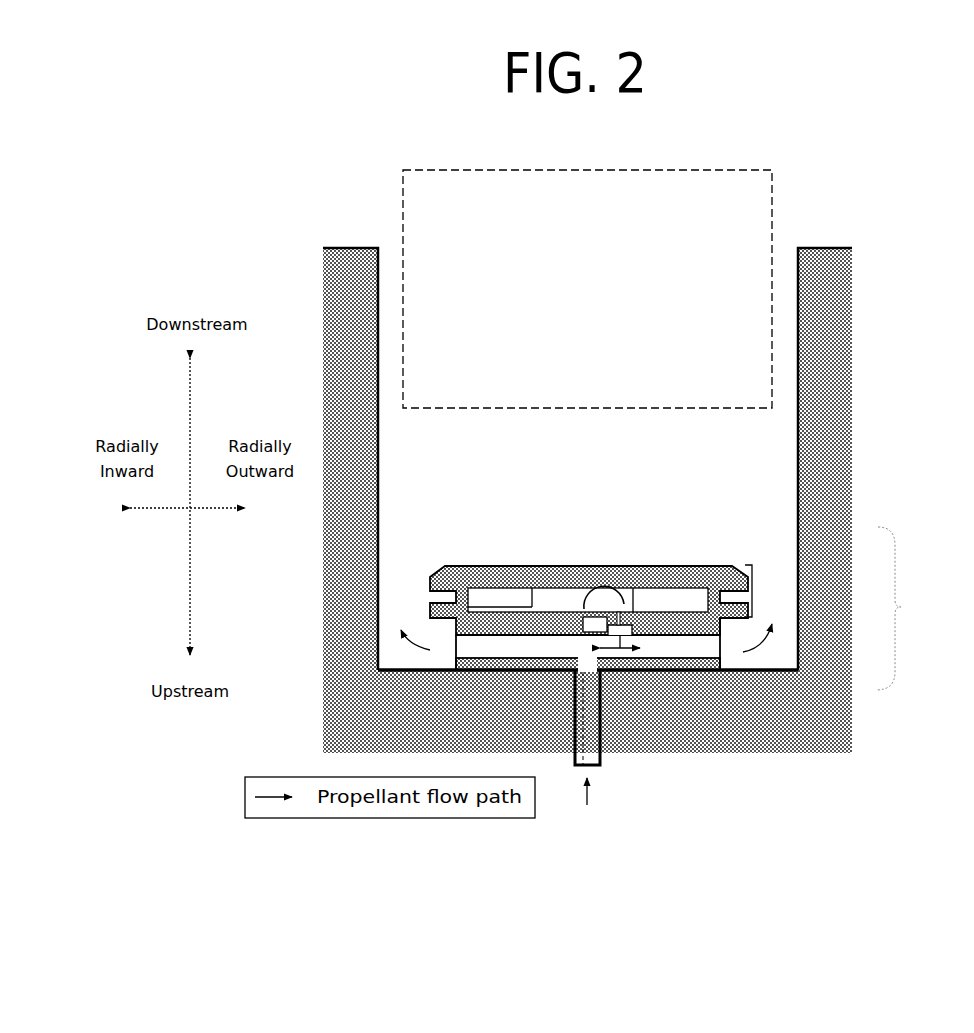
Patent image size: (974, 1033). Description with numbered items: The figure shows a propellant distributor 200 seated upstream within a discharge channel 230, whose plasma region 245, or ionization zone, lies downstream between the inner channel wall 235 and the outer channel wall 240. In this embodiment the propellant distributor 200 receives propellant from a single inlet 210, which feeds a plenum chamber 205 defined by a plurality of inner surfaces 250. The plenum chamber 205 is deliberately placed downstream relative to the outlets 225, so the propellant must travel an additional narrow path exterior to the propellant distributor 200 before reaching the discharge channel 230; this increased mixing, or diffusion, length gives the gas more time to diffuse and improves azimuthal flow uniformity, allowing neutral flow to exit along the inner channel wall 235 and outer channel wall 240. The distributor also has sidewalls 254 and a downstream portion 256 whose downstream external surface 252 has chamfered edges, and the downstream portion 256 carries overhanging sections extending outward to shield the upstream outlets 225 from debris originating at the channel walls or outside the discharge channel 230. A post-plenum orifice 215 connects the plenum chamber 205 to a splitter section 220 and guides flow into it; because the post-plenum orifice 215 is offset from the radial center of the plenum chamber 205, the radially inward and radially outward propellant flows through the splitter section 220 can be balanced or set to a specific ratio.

The propellant distributor 200 is at (902, 607).
The plenum chamber 205 is at (486, 596).
The inlet 210 is at (614, 775).
The post-plenum orifice 215 is at (627, 603).
The splitter section 220 is at (550, 654).
The outlets 225 is at (731, 669).
The discharge channel 230 is at (798, 228).
The inner channel wall 235 is at (342, 270).
The outer channel wall 240 is at (838, 313).
The plasma region 245 is at (587, 289).
The inner surfaces 250 is at (550, 612).
The downstream external surface 252 is at (602, 567).
The sidewalls 254 is at (457, 630).
The downstream portion 256 is at (748, 592).